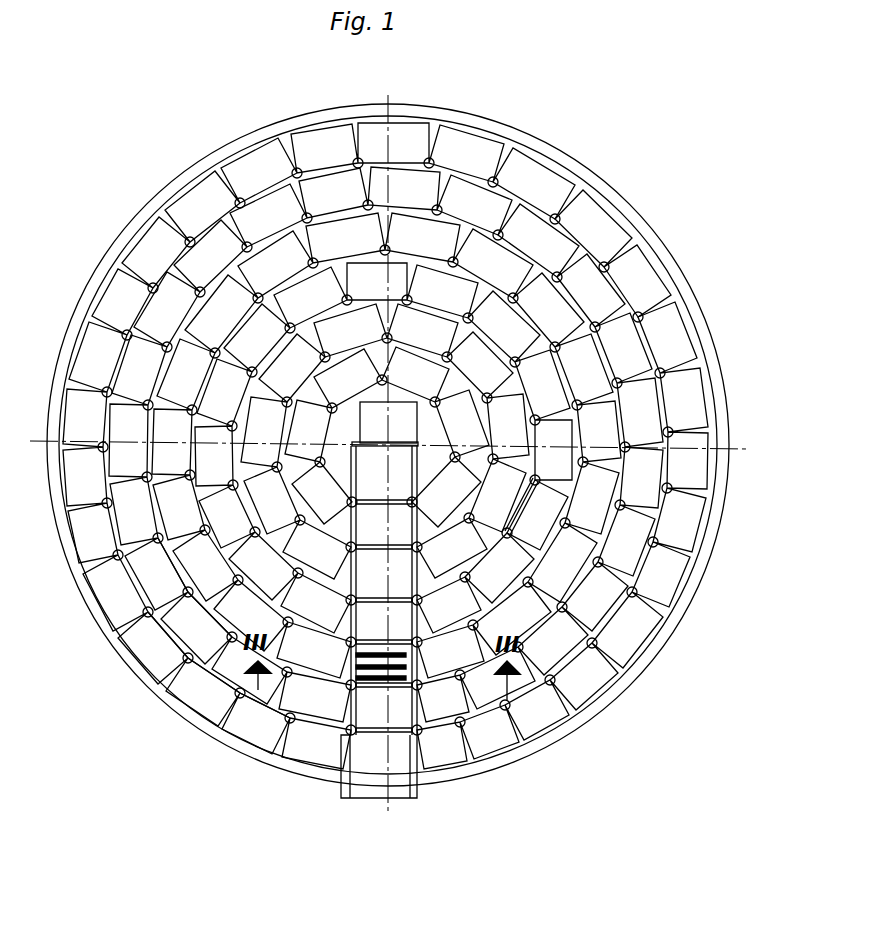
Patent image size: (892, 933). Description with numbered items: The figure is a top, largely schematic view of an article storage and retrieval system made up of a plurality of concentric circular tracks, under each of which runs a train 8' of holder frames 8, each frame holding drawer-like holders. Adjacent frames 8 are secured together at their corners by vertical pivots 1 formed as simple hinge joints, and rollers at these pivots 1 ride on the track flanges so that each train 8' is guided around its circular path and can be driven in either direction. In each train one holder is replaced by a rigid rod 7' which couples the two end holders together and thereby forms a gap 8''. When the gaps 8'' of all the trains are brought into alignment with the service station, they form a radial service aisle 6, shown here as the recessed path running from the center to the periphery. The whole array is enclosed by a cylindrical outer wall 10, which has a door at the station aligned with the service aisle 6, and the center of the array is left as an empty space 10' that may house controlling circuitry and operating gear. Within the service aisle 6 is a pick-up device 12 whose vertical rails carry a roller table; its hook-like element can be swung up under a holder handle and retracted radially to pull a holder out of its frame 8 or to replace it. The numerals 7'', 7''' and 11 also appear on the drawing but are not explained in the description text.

The vertical pivot 1 is at (606, 266).
The service aisle 6 is at (379, 585).
The rigid rod 7' is at (527, 528).
The column head 7'' is at (385, 451).
The column base 7''' is at (379, 760).
The holder frame 8 is at (219, 679).
The train 8' is at (170, 587).
The gap 8'' is at (536, 506).
The cylindrical outer wall 10 is at (388, 457).
The empty space 10' is at (301, 396).
The cross bar 11 is at (410, 730).
The pick-up device 12 is at (413, 663).